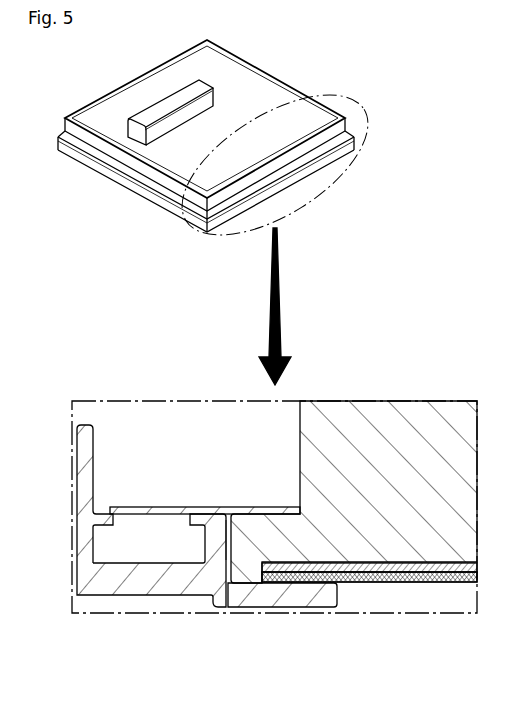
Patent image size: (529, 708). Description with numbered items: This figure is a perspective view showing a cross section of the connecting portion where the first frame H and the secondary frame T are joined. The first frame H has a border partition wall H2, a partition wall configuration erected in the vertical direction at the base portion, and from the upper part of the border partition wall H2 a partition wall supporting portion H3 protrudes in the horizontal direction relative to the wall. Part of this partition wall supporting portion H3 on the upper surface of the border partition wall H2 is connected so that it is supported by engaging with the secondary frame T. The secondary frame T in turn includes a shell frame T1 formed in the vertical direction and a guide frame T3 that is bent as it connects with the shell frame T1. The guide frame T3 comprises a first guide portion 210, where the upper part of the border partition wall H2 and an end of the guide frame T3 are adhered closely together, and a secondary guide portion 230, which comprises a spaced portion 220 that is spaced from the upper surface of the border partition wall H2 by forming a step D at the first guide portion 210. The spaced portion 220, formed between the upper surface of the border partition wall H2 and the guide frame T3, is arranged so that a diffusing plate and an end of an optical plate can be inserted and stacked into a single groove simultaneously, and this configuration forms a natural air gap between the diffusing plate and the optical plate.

The first frame H is at (298, 103).
The secondary frame T is at (322, 170).
The border partition wall H2 is at (402, 413).
The partition wall supporting portion H3 is at (242, 507).
The shell frame T1 is at (78, 551).
The guide frame T3 is at (140, 577).
The step D is at (229, 548).
The first guide portion 210 is at (262, 568).
The spaced portion 220 is at (268, 578).
The secondary guide portion 230 is at (317, 588).